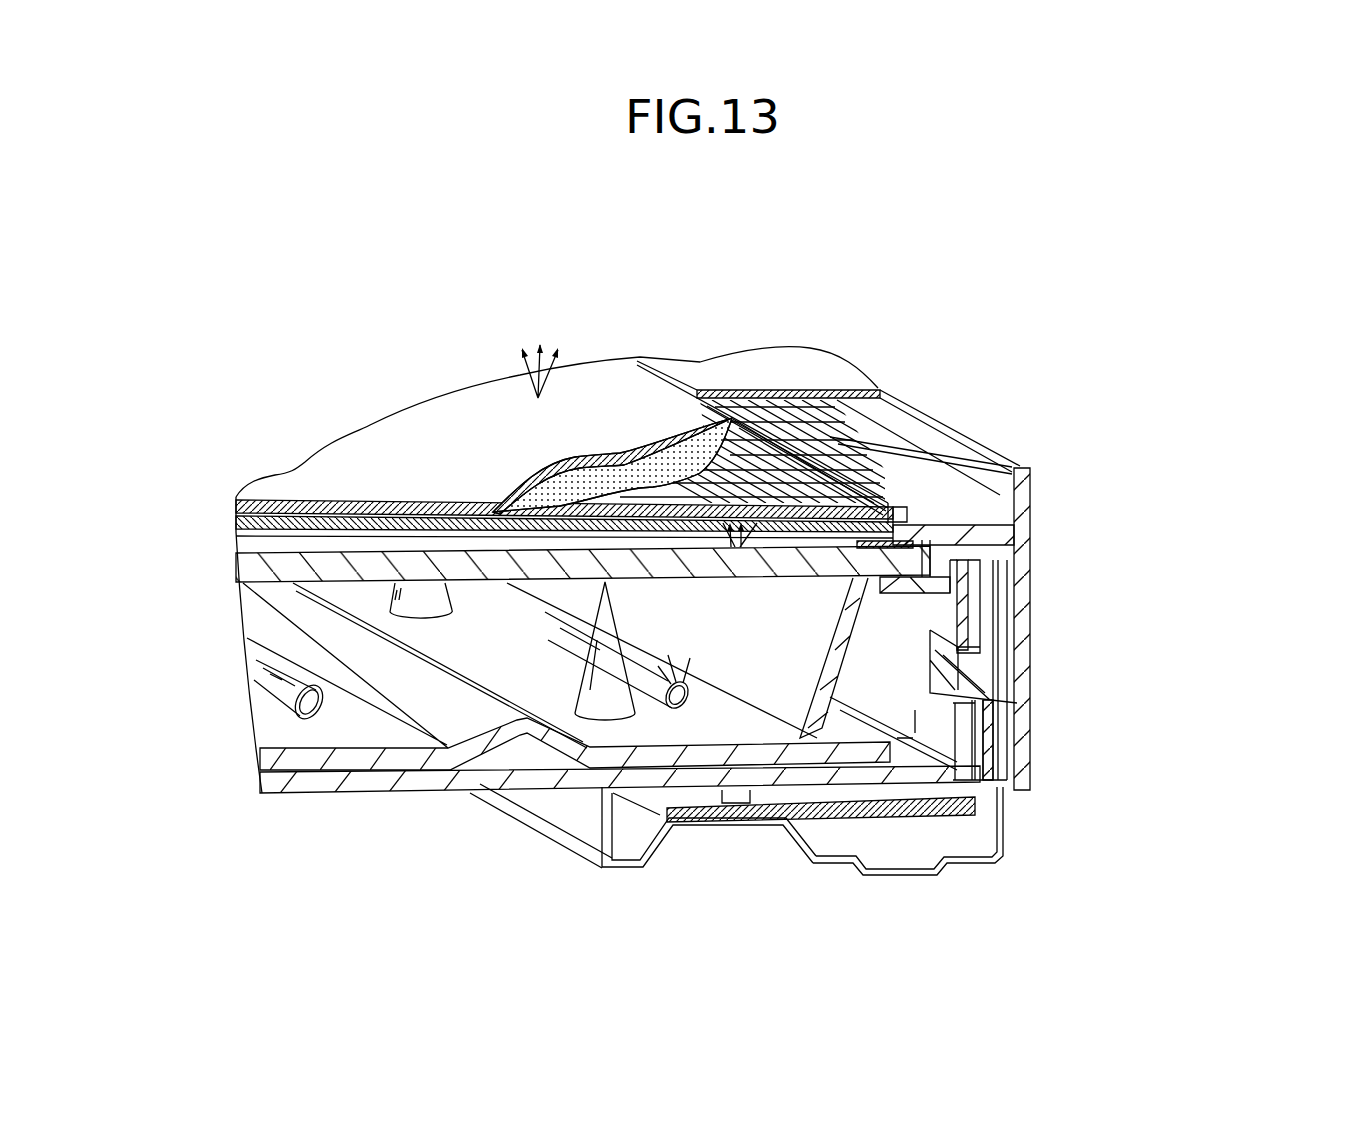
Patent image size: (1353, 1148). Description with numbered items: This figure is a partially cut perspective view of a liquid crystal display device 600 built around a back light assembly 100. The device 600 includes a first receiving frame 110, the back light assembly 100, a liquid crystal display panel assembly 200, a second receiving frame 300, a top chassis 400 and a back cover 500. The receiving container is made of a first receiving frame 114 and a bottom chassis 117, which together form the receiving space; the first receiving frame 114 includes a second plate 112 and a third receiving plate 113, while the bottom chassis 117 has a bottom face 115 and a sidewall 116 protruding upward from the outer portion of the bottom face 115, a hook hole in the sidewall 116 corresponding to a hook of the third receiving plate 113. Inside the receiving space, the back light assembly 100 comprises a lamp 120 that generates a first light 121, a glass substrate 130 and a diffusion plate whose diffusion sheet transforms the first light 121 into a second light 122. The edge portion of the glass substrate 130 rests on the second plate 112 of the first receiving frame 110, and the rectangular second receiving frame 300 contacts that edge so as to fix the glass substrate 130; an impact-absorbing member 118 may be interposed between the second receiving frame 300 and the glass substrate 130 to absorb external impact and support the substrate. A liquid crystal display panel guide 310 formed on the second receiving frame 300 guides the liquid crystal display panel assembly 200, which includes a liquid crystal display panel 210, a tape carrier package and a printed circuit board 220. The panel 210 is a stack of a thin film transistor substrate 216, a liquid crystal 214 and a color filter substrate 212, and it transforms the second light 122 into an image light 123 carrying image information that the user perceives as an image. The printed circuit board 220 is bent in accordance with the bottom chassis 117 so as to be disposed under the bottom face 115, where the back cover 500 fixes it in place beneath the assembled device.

The back light assembly 100 is at (1192, 572).
The first receiving frame 110 is at (1042, 707).
The second plate 112 is at (940, 532).
The third receiving plate 113 is at (992, 640).
The first receiving frame 114 is at (890, 613).
The bottom face 115 is at (957, 727).
The sidewall 116 is at (1003, 786).
The bottom chassis 117 is at (1053, 923).
The impact-absorbing member 118 is at (910, 523).
The lamp 120 is at (260, 676).
The first light 121 is at (686, 686).
The second light 122 is at (757, 544).
The image light 123 is at (522, 377).
The glass substrate 130 is at (256, 571).
The liquid crystal display panel assembly 200 is at (364, 456).
The liquid crystal display panel 210 is at (856, 268).
The color filter substrate 212 is at (745, 397).
The liquid crystal 214 is at (792, 465).
The thin film transistor substrate 216 is at (870, 448).
The printed circuit board 220 is at (720, 806).
The second receiving frame 300 is at (866, 462).
The liquid crystal display panel guide 310 is at (1014, 480).
The top chassis 400 is at (722, 378).
The back cover 500 is at (873, 870).
The liquid crystal display device 600 is at (1042, 302).